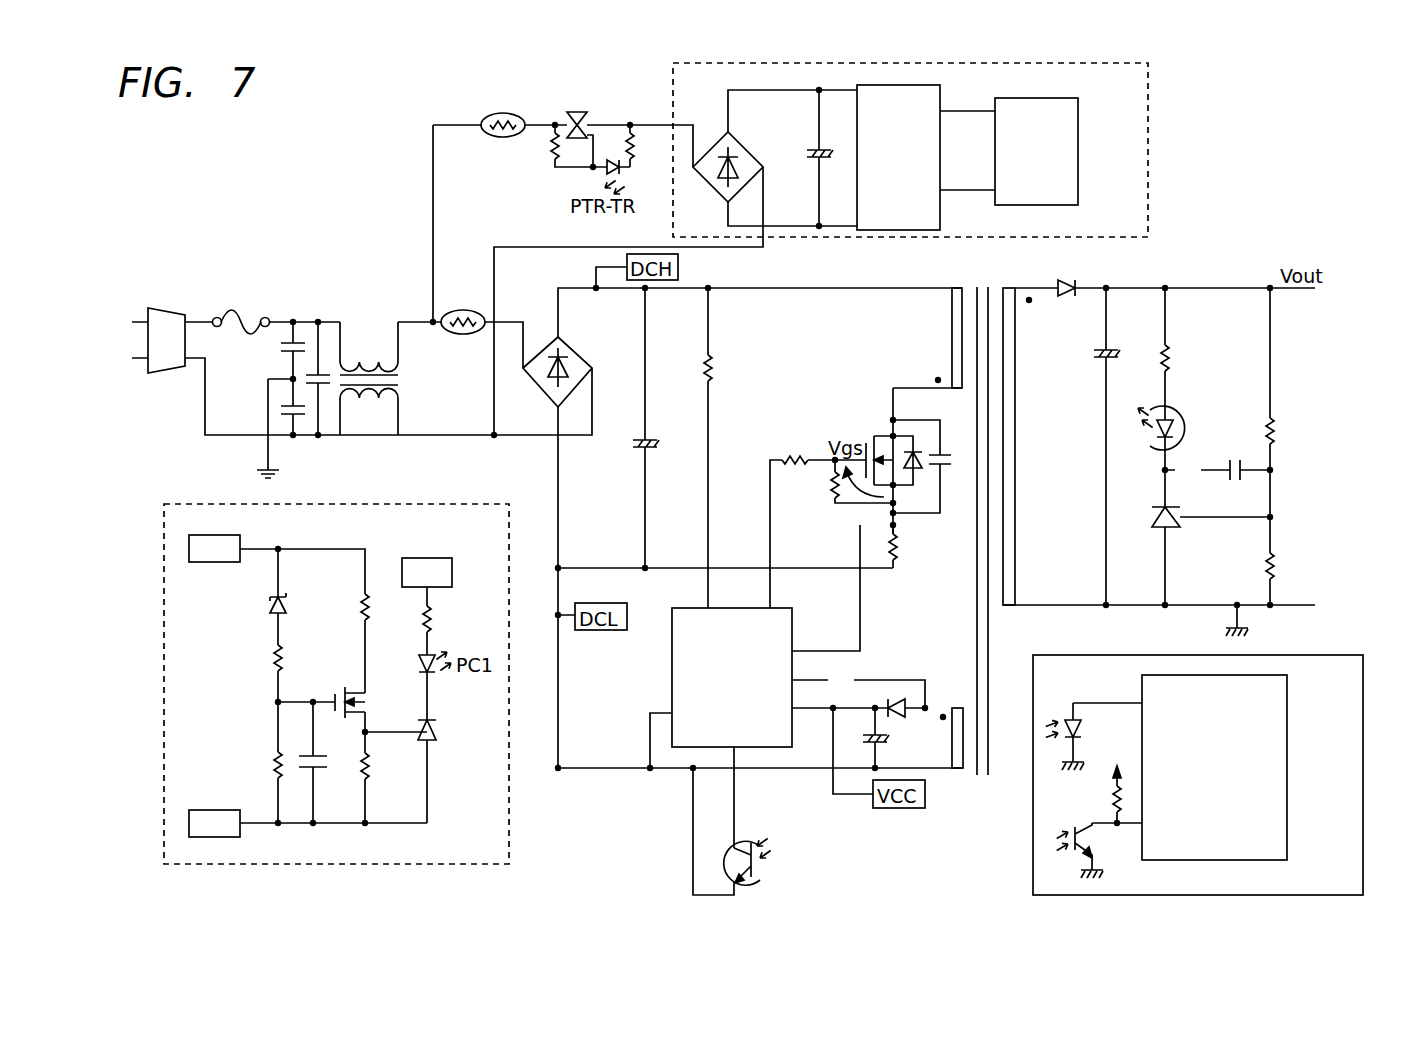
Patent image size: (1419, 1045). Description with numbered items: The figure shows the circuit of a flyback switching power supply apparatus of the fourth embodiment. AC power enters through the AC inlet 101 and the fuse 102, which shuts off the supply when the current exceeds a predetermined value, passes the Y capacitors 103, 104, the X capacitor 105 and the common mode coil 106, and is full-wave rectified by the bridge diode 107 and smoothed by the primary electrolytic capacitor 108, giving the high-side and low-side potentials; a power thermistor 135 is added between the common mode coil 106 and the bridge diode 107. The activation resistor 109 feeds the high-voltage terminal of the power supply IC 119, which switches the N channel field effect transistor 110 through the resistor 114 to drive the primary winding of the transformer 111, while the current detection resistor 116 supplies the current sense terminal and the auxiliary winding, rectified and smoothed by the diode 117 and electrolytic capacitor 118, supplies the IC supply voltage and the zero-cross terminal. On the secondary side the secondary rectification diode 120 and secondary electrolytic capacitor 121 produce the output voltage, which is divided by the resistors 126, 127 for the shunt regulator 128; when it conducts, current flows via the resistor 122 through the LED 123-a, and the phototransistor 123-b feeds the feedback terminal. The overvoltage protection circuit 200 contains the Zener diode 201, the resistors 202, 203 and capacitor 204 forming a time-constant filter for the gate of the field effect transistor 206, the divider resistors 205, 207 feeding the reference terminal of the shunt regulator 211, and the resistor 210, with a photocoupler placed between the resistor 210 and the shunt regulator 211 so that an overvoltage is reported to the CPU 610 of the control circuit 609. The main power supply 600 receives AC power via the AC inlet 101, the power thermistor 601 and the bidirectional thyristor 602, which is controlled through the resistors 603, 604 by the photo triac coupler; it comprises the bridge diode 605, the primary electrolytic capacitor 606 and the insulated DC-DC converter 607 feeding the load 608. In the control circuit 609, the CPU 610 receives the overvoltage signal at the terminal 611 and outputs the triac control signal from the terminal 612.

The AC inlet 101 is at (171, 308).
The fuse 102 is at (241, 313).
The capacitor 103 is at (288, 349).
The capacitor 104 is at (288, 411).
The capacitor 105 is at (326, 372).
The common mode coil 106 is at (370, 345).
The bridge diode 107 is at (575, 354).
The primary electrolytic capacitor 108 is at (630, 445).
The activation resistor 109 is at (714, 368).
The N channel field effect transistor 110 is at (878, 438).
The transformer 111 is at (980, 283).
The resistor 114 is at (794, 456).
The current detection resistor 116 is at (902, 553).
The diode 117 is at (896, 700).
The electrolytic capacitor 118 is at (892, 740).
The power supply IC 119 is at (672, 672).
The secondary rectification diode 120 is at (1068, 281).
The secondary electrolytic capacitor 121 is at (1086, 354).
The resistor 122 is at (1173, 358).
The LED of photocoupler 123-a is at (1196, 400).
The phototransistor of photocoupler 123-b is at (772, 820).
The resistor 126 is at (1278, 431).
The resistor 127 is at (1278, 566).
The shunt regulator 128 is at (1163, 532).
The power thermistor 135 is at (461, 310).
The overvoltage protection circuit 200 is at (512, 850).
The Zener diode 201 is at (271, 606).
The resistor 202 is at (273, 658).
The resistor 203 is at (273, 765).
The capacitor 204 is at (320, 770).
The resistor 205 is at (360, 607).
The field effect transistor 206 is at (349, 688).
The resistor 207 is at (372, 768).
The resistor 210 is at (437, 617).
The shunt regulator 211 is at (440, 733).
The main power supply 600 is at (1152, 83).
The power thermistor 601 is at (500, 112).
The bidirectional thyristor 602 is at (575, 110).
The resistor 603 is at (634, 140).
The resistor 604 is at (548, 160).
The bridge diode 605 is at (750, 142).
The primary electrolytic capacitor 606 is at (812, 172).
The insulated DC-DC converter 607 is at (935, 210).
The load 608 is at (1078, 193).
The control circuit 609 is at (1365, 881).
The CPU 610 is at (1289, 762).
The terminal 611 is at (1126, 830).
The terminal 612 is at (1120, 702).